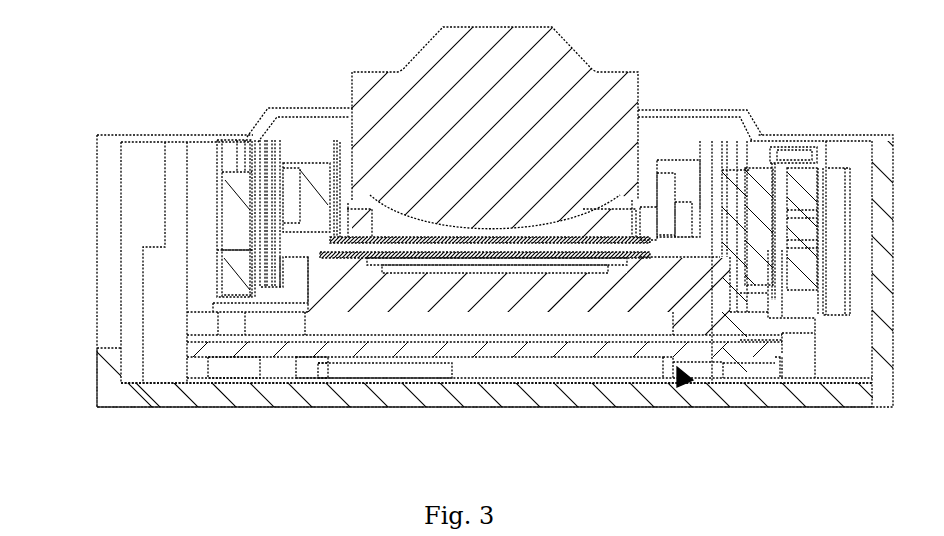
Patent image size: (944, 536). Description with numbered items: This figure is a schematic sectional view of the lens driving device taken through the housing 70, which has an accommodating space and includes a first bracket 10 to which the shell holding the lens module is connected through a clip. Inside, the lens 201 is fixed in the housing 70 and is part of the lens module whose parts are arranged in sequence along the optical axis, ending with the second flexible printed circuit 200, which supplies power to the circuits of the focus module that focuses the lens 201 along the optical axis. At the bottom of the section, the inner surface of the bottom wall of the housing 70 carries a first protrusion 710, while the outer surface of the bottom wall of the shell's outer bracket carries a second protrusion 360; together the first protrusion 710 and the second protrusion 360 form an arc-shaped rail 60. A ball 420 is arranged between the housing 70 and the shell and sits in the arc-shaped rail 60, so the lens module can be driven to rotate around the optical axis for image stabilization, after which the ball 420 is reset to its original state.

The first bracket 10 is at (95, 148).
The second flexible printed circuit 200 is at (262, 108).
The lens 201 is at (430, 52).
The housing 70 is at (108, 388).
The arc-shaped rail 60 is at (688, 407).
The second protrusion 360 is at (275, 367).
The ball 420 is at (312, 375).
The first protrusion 710 is at (352, 367).